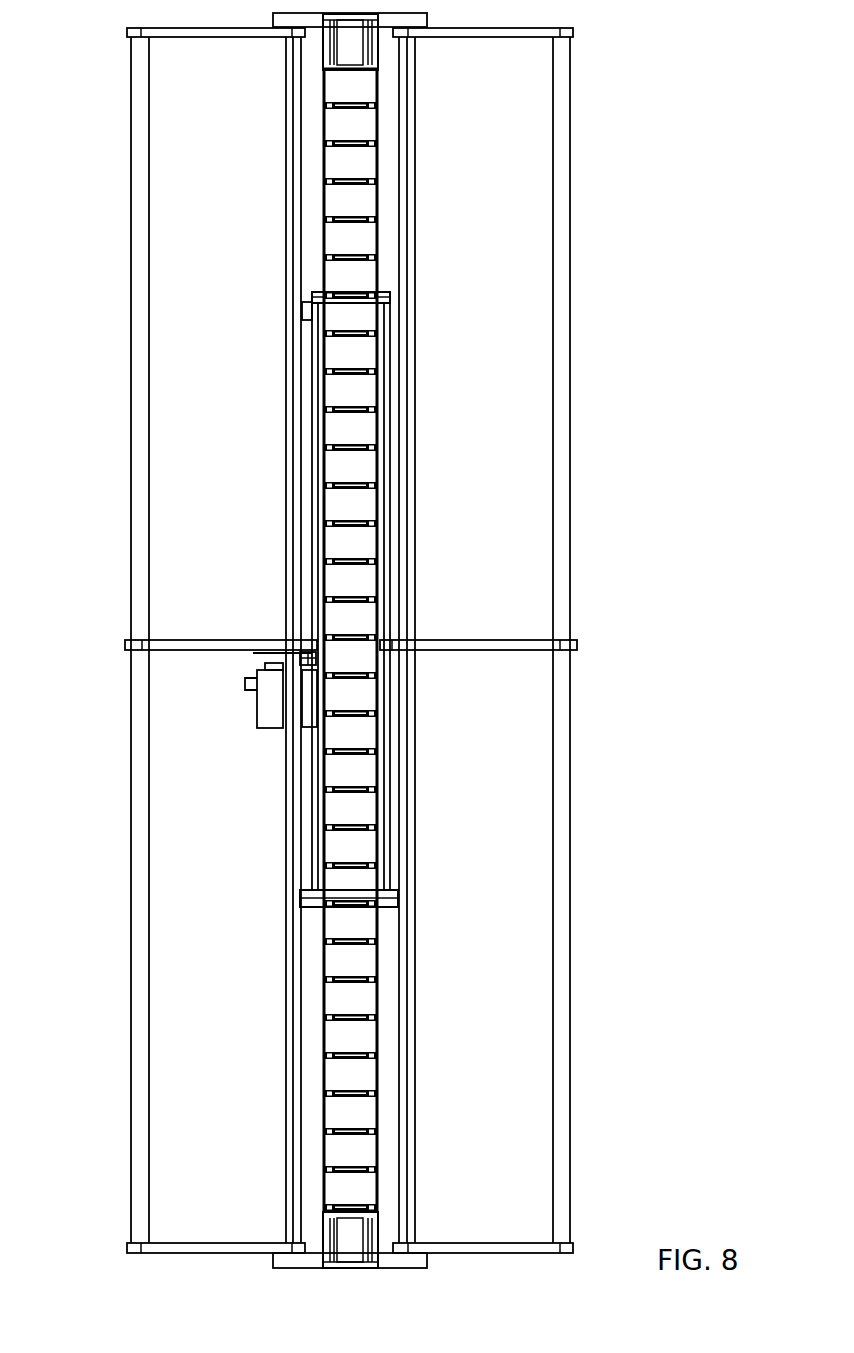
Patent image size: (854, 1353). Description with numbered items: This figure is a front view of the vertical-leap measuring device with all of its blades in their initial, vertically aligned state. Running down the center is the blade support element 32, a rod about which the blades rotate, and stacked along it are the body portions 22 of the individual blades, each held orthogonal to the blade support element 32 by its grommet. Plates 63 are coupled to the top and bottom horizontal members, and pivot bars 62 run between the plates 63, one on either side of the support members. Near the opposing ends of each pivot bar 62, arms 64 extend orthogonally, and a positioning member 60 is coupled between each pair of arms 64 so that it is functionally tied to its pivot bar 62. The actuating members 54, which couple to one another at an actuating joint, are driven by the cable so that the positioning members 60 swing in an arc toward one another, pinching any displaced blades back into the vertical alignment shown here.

The body portion 22 is at (352, 426).
The blade support element 32 is at (354, 1237).
The actuating members 54 is at (198, 648).
The positioning member 60 is at (563, 239).
The pivot bar 62 is at (408, 191).
The plate 63 is at (350, 43).
The arm 64 is at (195, 30).